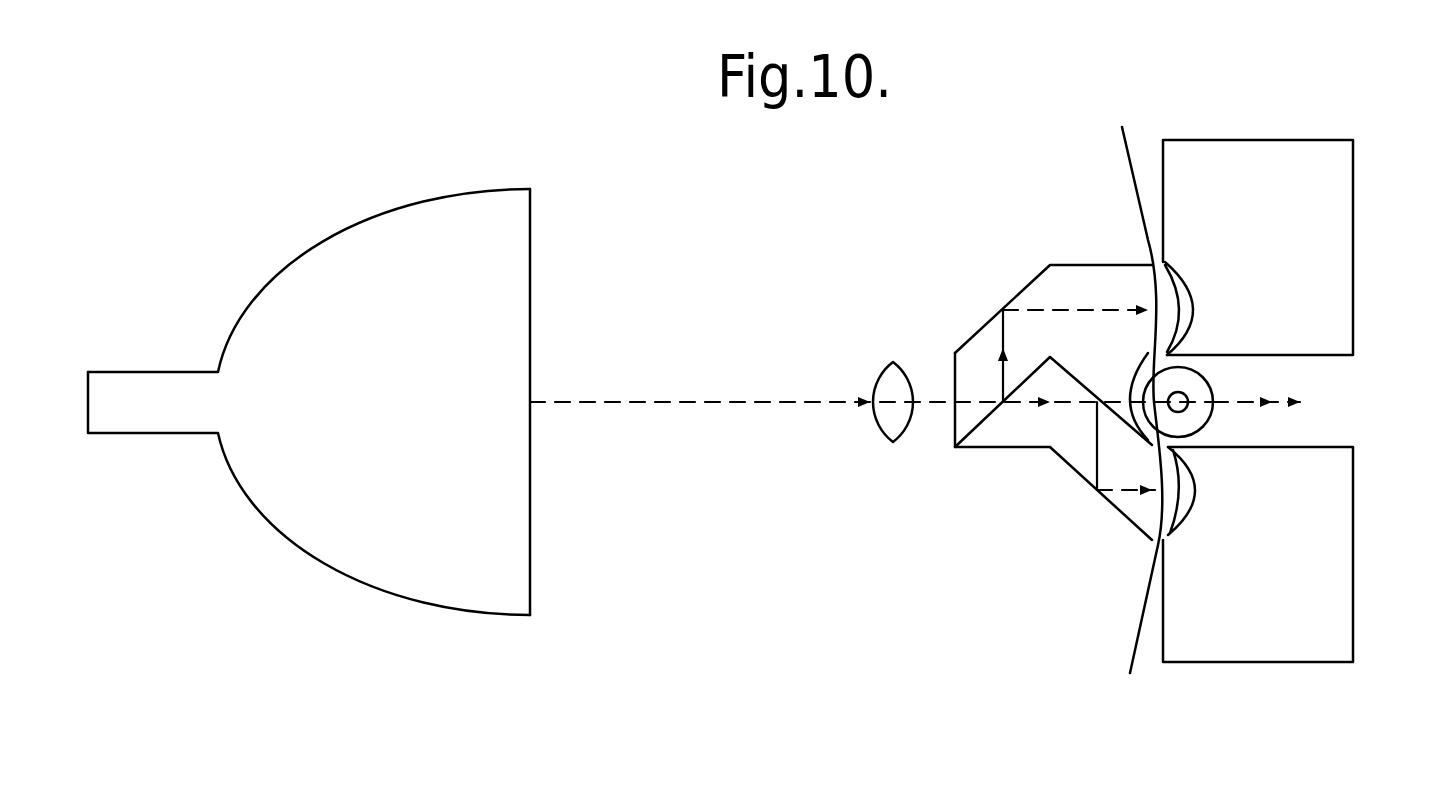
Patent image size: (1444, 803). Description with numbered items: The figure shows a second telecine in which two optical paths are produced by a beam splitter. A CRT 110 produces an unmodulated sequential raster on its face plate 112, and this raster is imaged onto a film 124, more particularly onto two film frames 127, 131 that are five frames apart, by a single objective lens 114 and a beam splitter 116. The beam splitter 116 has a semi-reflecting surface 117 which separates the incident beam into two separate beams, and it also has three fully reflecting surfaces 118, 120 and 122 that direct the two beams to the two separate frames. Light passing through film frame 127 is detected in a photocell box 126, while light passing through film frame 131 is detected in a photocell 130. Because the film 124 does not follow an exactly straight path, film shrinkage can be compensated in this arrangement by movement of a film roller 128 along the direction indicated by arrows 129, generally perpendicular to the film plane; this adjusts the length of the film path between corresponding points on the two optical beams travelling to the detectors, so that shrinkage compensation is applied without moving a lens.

The CRT 110 is at (341, 226).
The face plate 112 is at (532, 242).
The objective lens 114 is at (892, 363).
The beam splitter 116 is at (983, 449).
The semi-reflecting surface 117 is at (1038, 365).
The fully reflecting surface 118 is at (1025, 288).
The fully reflecting surface 120 is at (1128, 430).
The fully reflecting surface 122 is at (1118, 515).
The film 124 is at (1124, 137).
The photocell box 126 is at (1278, 140).
The film frame 127 is at (1162, 308).
The film roller 128 is at (1206, 383).
The arrows 129 is at (1299, 402).
The photocell 130 is at (1355, 567).
The film frame 131 is at (1160, 490).